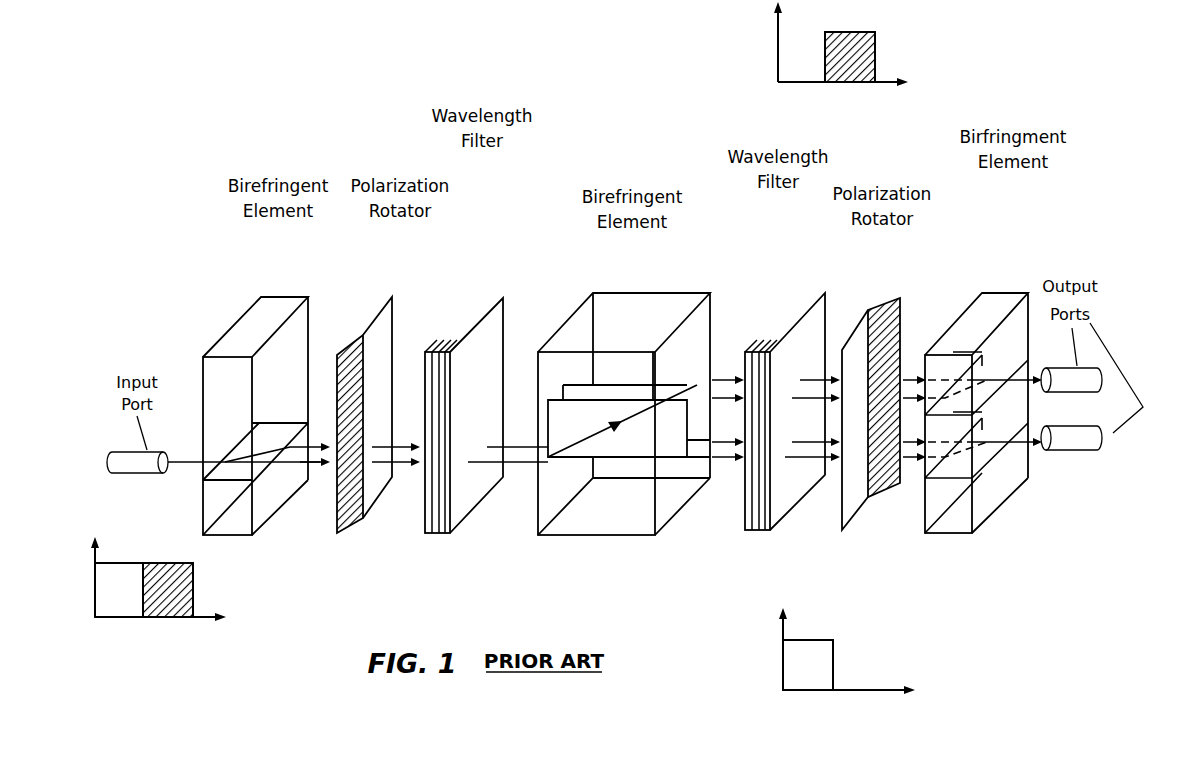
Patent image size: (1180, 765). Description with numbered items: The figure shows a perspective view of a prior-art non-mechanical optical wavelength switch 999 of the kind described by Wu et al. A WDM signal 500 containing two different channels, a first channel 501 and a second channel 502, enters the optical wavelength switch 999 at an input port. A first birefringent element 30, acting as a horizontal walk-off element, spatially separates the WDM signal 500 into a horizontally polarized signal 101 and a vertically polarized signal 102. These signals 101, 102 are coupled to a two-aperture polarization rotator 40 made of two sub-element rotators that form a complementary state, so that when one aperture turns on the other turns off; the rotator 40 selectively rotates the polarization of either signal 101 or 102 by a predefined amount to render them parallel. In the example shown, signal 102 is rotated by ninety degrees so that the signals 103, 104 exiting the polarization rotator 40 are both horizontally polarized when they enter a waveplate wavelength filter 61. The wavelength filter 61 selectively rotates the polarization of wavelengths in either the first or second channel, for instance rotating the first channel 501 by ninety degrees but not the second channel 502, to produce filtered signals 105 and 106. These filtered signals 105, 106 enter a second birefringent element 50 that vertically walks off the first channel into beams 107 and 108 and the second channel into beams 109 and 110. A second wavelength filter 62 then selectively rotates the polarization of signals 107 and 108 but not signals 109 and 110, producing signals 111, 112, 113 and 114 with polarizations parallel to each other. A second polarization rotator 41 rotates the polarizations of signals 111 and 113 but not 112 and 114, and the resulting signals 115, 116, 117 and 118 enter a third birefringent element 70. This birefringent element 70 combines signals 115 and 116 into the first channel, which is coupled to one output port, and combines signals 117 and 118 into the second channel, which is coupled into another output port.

The optical wavelength switch 999 is at (380, 80).
The first birefringent element 30 is at (281, 297).
The polarization rotator 40 is at (393, 298).
The wavelength filter 61 is at (512, 300).
The second birefringent element 50 is at (639, 302).
The second wavelength filter 62 is at (800, 300).
The second polarization rotator 41 is at (880, 308).
The third birefringent element 70 is at (997, 302).
The horizontally polarized signal 101 is at (327, 443).
The vertically polarized signal 102 is at (326, 466).
The signal exiting the polarization rotator 103 is at (406, 443).
The signal exiting the polarization rotator 104 is at (408, 466).
The filtered signal 105 is at (487, 446).
The filtered signal 106 is at (500, 466).
The first channel beam 107 is at (722, 379).
The first channel beam 108 is at (705, 383).
The second channel beam 109 is at (735, 460).
The second channel beam 110 is at (697, 478).
The signal output by second wavelength filter 111 is at (827, 378).
The signal output by second wavelength filter 112 is at (800, 312).
The signal output by second wavelength filter 113 is at (840, 458).
The signal output by second wavelength filter 114 is at (828, 460).
The resulting signal 115 is at (920, 378).
The resulting signal 116 is at (945, 398).
The resulting signal 117 is at (935, 470).
The resulting signal 118 is at (900, 476).
The WDM signal 500 is at (143, 590).
The first channel 501 is at (825, 55).
The second channel 502 is at (830, 662).